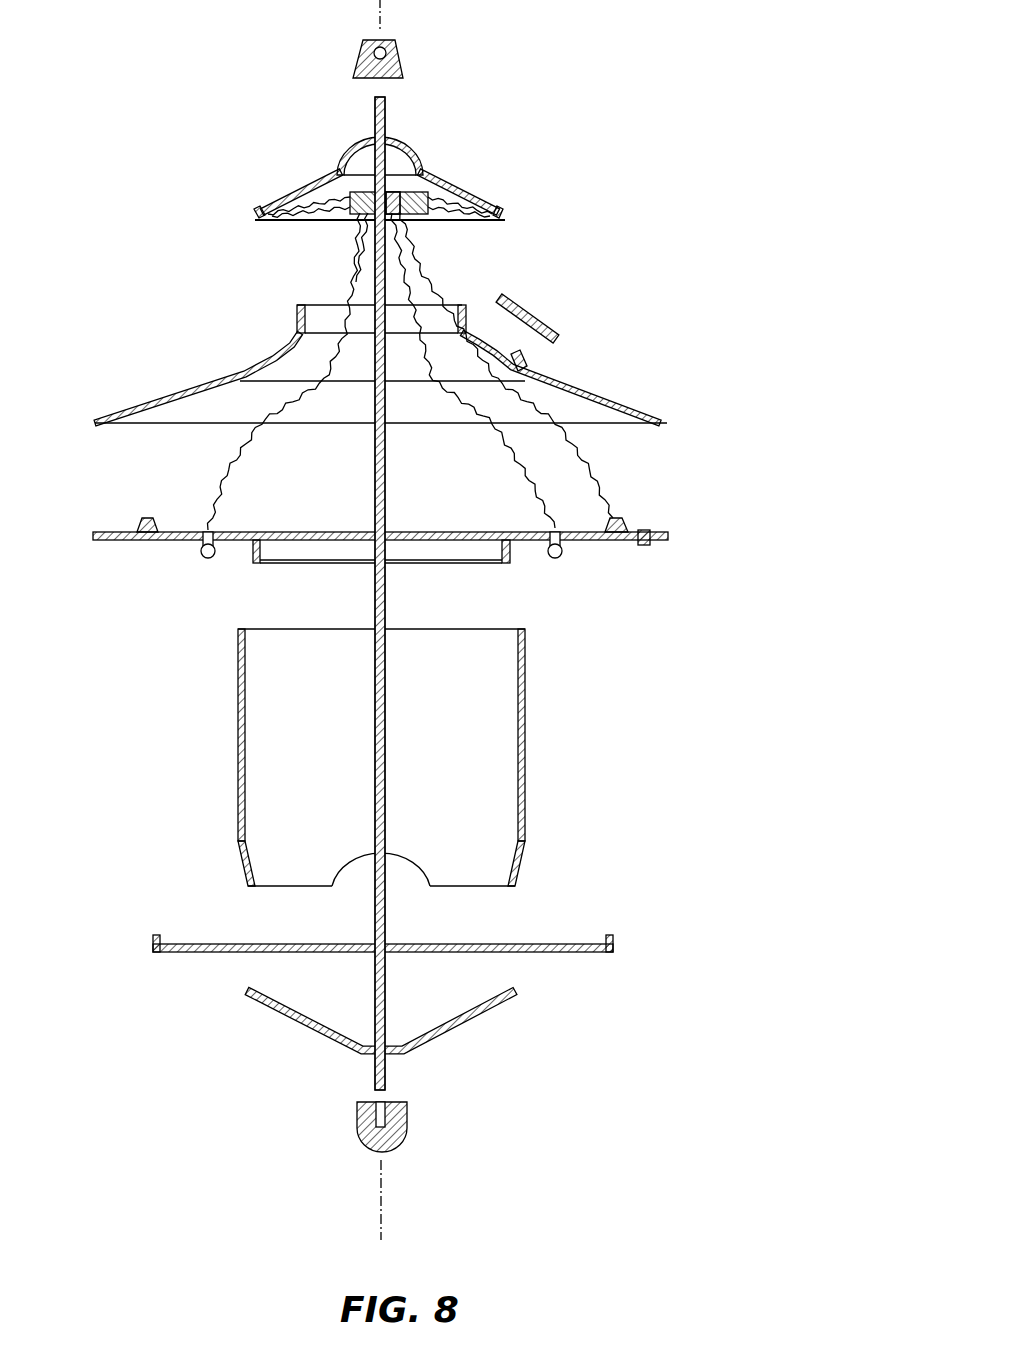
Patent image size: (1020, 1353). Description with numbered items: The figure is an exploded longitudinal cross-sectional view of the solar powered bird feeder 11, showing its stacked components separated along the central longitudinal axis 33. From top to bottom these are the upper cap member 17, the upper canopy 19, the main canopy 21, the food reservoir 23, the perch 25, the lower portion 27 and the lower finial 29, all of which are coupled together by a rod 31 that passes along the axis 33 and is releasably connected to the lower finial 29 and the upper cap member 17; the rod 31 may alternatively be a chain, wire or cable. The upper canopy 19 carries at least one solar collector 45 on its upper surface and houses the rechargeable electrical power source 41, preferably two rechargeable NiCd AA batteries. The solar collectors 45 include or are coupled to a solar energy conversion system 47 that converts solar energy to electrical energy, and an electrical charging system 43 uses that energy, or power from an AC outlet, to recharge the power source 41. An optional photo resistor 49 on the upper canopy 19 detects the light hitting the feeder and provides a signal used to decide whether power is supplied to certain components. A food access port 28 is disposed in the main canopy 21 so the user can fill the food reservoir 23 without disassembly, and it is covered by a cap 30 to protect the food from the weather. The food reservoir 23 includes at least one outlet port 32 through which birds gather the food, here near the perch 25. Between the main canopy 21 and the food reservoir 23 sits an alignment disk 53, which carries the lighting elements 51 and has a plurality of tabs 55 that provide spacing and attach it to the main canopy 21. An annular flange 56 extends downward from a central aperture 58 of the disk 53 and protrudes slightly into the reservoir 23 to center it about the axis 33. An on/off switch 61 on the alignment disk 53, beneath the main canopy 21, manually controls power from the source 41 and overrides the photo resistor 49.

The bird feeder 11 is at (730, 671).
The upper cap member 17 is at (412, 55).
The upper canopy 19 is at (250, 218).
The main canopy 21 is at (657, 418).
The food reservoir 23 is at (535, 730).
The perch 25 is at (592, 956).
The lower portion 27 is at (483, 1018).
The food access port 28 is at (522, 346).
The lower finial 29 is at (410, 1127).
The cap 30 is at (535, 305).
The rod 31 is at (392, 930).
The outlet port 32 is at (350, 846).
The central longitudinal axis 33 is at (392, 1193).
The rechargeable electrical power source 41 is at (403, 186).
The electrical charging system 43 is at (345, 222).
The solar collector 45 is at (312, 172).
The solar energy conversion system 47 is at (432, 222).
The photo resistor 49 is at (256, 200).
The lighting elements 51 is at (204, 561).
The alignment disk 53 is at (659, 527).
The tabs 55 is at (147, 514).
The annular flange 56 is at (248, 558).
The central aperture 58 is at (494, 557).
The on/off switch 61 is at (647, 549).